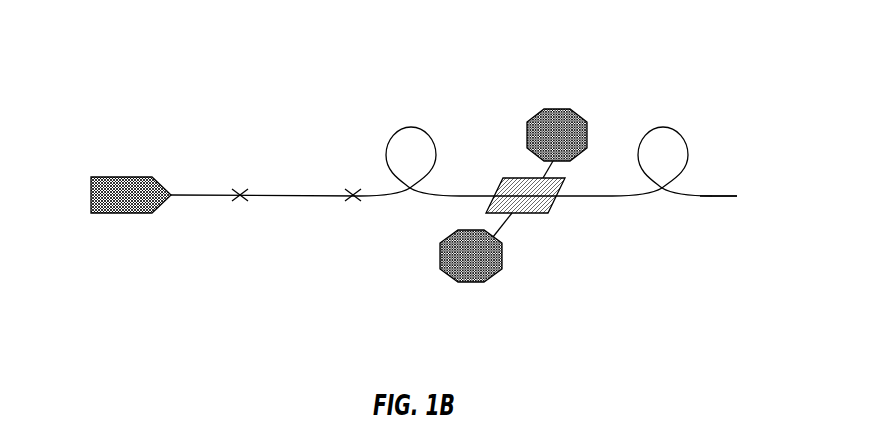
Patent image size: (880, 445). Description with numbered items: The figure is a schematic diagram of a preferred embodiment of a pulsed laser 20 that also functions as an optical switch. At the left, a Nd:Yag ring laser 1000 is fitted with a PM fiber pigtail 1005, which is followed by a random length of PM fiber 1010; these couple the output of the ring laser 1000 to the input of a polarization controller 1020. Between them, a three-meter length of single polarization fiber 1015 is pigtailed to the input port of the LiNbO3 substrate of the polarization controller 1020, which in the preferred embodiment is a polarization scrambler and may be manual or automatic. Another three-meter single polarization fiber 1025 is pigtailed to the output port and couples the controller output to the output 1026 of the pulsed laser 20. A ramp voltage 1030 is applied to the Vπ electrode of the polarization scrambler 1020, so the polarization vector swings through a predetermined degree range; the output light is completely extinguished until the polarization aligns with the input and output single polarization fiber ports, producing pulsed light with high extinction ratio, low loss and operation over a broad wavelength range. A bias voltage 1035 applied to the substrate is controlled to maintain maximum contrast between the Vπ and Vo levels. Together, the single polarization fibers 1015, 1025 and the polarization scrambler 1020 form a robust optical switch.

The pulsed laser 20 is at (291, 73).
The Nd:Yag ring laser 1000 is at (108, 176).
The PM fiber pigtail 1005 is at (230, 192).
The random length of PM fiber 1010 is at (332, 196).
The single polarization fiber 1015 is at (405, 127).
The polarization controller 1020 is at (520, 175).
The single polarization fiber 1025 is at (660, 204).
The output 1026 is at (703, 193).
The ramp voltage 1030 is at (470, 285).
The bias voltage 1035 is at (558, 106).